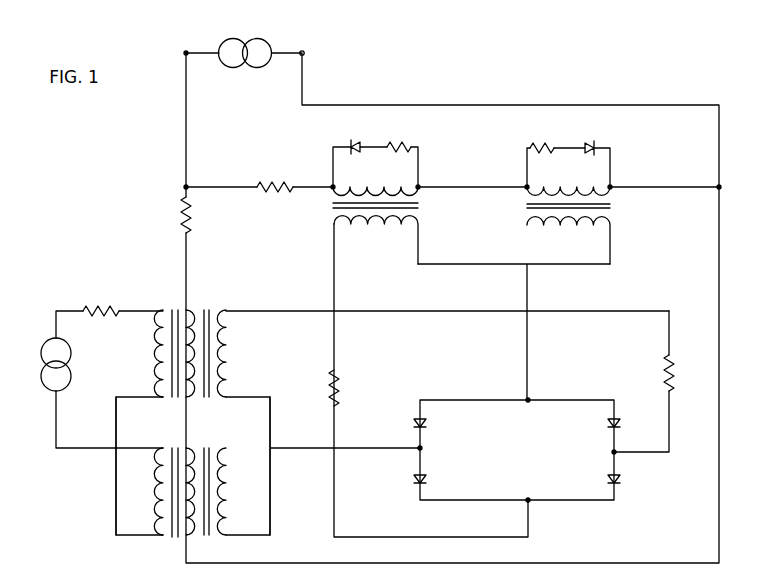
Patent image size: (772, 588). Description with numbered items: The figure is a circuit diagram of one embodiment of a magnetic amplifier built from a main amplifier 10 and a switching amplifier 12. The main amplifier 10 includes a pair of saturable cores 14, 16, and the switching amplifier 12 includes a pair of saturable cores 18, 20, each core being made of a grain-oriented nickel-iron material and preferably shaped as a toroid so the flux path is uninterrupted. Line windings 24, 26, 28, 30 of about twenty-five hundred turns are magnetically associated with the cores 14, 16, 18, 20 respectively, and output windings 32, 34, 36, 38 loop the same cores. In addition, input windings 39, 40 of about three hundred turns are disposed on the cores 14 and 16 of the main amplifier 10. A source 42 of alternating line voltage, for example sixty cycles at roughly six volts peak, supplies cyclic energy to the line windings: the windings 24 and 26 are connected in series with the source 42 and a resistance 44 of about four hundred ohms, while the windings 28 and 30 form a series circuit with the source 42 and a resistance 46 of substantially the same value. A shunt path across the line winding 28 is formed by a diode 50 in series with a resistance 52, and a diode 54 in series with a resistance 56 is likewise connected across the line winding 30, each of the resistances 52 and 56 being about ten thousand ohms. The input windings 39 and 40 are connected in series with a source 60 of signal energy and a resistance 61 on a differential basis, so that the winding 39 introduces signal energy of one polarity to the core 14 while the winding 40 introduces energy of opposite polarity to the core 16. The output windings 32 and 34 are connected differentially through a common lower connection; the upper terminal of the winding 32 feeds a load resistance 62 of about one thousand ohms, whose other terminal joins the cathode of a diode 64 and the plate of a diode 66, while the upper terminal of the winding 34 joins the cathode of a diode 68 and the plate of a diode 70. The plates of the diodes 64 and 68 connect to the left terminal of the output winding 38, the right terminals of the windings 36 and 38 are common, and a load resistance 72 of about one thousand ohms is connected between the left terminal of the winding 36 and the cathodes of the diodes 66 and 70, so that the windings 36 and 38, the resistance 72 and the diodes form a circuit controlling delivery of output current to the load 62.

The main amplifier 10 is at (158, 436).
The switching amplifier 12 is at (517, 158).
The core 14 is at (174, 308).
The core 16 is at (176, 538).
The core 18 is at (420, 206).
The core 20 is at (613, 208).
The line winding 24 is at (192, 309).
The line winding 26 is at (190, 450).
The line winding 28 is at (419, 192).
The line winding 30 is at (611, 192).
The output winding 32 is at (221, 354).
The output winding 34 is at (224, 480).
The output winding 36 is at (372, 227).
The output winding 38 is at (576, 226).
The input winding 39 is at (155, 351).
The input winding 40 is at (157, 488).
The source of alternating line voltage 42 is at (240, 39).
The resistance 44 is at (192, 224).
The resistance 46 is at (271, 193).
The diode 50 is at (354, 145).
The resistance 52 is at (404, 145).
The diode 54 is at (593, 142).
The resistance 56 is at (540, 146).
The source of signal energy 60 is at (41, 367).
The resistance 61 is at (105, 300).
The resistance 62 is at (661, 367).
The diode 64 is at (606, 424).
The diode 66 is at (606, 479).
The diode 68 is at (412, 421).
The diode 70 is at (412, 479).
The resistance 72 is at (340, 372).